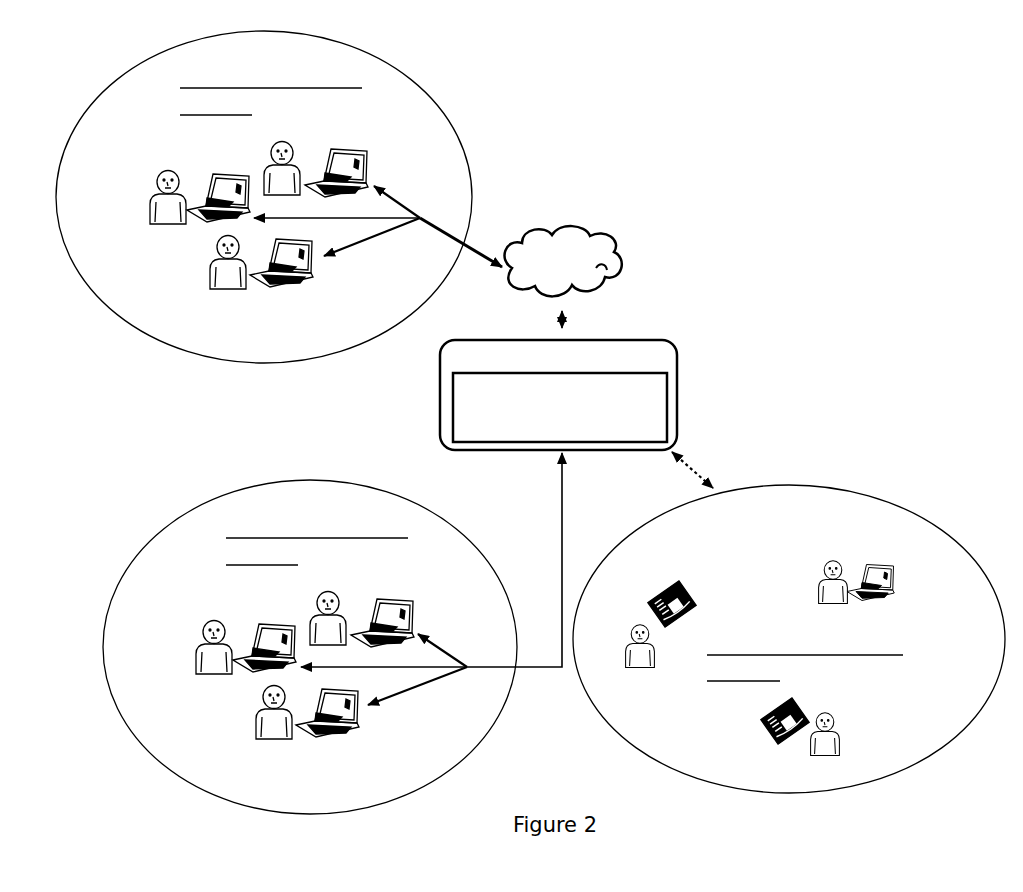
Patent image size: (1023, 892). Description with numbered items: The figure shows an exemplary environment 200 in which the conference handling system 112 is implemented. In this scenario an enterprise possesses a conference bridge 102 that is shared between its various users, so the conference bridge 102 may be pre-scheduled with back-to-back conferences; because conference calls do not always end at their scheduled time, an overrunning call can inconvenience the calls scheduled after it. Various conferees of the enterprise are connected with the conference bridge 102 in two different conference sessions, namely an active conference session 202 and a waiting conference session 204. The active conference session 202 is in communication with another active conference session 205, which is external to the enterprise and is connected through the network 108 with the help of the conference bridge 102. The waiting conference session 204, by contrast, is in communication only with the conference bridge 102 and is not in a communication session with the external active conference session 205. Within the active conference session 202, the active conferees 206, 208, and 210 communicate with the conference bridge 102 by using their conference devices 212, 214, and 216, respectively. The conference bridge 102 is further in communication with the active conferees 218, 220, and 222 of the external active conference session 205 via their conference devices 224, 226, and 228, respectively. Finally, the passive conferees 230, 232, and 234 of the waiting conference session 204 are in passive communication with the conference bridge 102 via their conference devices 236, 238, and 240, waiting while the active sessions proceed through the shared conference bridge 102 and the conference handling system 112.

The exemplary environment 200 is at (835, 218).
The conference bridge 102 is at (677, 398).
The network 108 is at (623, 265).
The conference handling system 112 is at (677, 368).
The active conference session 202 is at (395, 800).
The waiting conference session 204 is at (905, 765).
The active conference session 205 is at (350, 352).
The active conferee 206 is at (256, 718).
The active conferee 208 is at (196, 653).
The active conferee 210 is at (336, 595).
The conference device 212 is at (309, 737).
The conference device 214 is at (246, 626).
The conference device 216 is at (413, 613).
The active conferee 218 is at (210, 268).
The active conferee 220 is at (150, 203).
The active conferee 222 is at (290, 145).
The conference device 224 is at (263, 287).
The conference device 226 is at (200, 176).
The conference device 228 is at (367, 163).
The passive conferee 230 is at (633, 630).
The passive conferee 232 is at (823, 567).
The passive conferee 234 is at (823, 712).
The conference device 236 is at (688, 596).
The conference device 238 is at (895, 578).
The conference device 240 is at (770, 728).